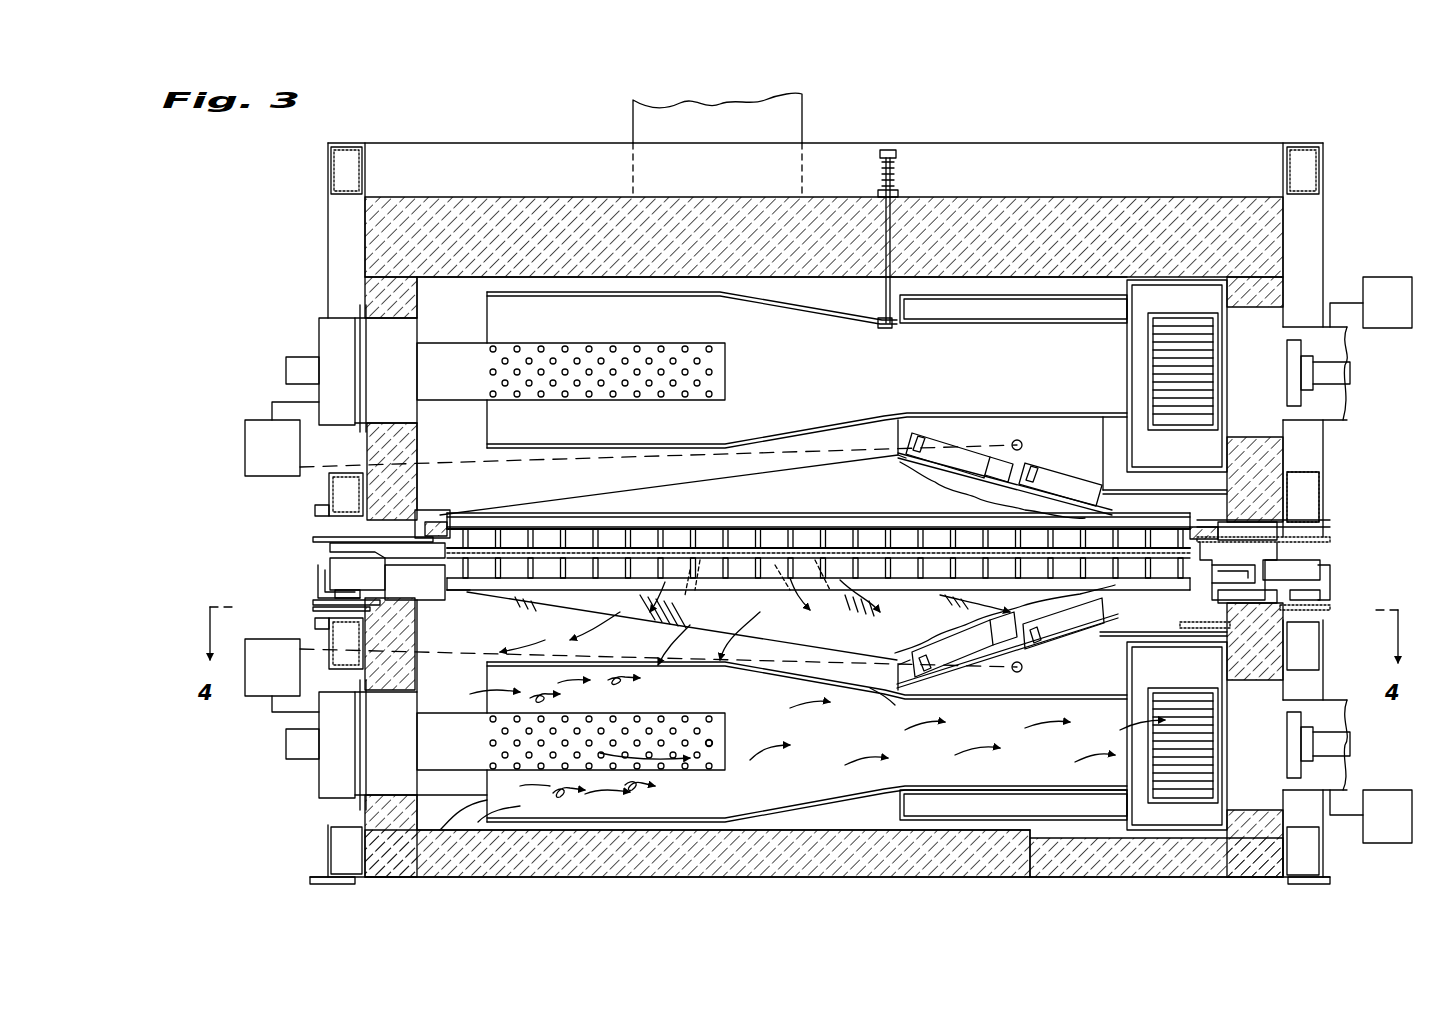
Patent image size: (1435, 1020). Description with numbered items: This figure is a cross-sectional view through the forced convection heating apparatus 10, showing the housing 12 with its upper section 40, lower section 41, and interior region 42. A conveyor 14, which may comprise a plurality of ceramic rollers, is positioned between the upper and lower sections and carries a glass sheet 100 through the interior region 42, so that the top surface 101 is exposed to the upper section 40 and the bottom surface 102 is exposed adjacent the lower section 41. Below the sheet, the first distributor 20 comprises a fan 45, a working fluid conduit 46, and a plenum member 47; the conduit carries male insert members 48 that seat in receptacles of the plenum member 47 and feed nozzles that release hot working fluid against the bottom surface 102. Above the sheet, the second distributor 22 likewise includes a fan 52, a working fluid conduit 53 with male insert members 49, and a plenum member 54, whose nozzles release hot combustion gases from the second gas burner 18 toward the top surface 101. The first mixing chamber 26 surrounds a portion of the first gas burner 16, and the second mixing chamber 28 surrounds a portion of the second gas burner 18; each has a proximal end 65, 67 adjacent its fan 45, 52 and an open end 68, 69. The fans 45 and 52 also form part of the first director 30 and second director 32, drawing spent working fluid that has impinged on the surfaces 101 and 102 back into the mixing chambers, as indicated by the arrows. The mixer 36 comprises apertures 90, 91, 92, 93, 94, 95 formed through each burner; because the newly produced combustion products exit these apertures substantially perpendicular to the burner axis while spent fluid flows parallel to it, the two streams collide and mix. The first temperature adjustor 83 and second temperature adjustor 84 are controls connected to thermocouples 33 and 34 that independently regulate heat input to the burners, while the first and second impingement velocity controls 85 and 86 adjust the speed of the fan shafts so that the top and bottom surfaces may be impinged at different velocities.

The forced convection heating apparatus 10 is at (1255, 574).
The housing 12 is at (1185, 125).
The conveyor 14 is at (338, 560).
The first gas burner 16 is at (462, 715).
The second gas burner 18 is at (470, 402).
The first distributor 20 is at (1205, 660).
The second distributor 22 is at (1215, 455).
The first mixing chamber 26 is at (856, 805).
The second mixing chamber 28 is at (556, 452).
The first director 30 is at (1185, 690).
The second director 32 is at (1170, 310).
The thermocouple 33 is at (1023, 668).
The thermocouple 34 is at (1022, 438).
The mixer 36 is at (700, 830).
The upper section 40 is at (1330, 280).
The lower section 41 is at (485, 875).
The interior region 42 is at (390, 488).
The fan 45 is at (1185, 780).
The working fluid conduit 46 is at (778, 630).
The plenum member 47 is at (1210, 634).
The male insert member 48 is at (955, 660).
The male insert member 49 is at (968, 440).
The fan 52 is at (1175, 358).
The working fluid conduit 53 is at (812, 445).
The plenum member 54 is at (1215, 483).
The proximal end 65 is at (1052, 795).
The proximal end 67 is at (1012, 340).
The open end 68 is at (488, 805).
The open end 69 is at (485, 300).
The first temperature adjustor 83 is at (270, 690).
The second temperature adjustor 84 is at (250, 435).
The first impingement velocity control 85 is at (1388, 798).
The second impingement velocity control 86 is at (1395, 320).
The aperture 90 is at (720, 740).
The aperture 91 is at (700, 712).
The aperture 92 is at (525, 753).
The aperture 93 is at (569, 715).
The aperture 94 is at (625, 730).
The aperture 95 is at (657, 712).
The glass sheet 100 is at (745, 545).
The top surface 101 is at (705, 548).
The bottom surface 102 is at (610, 560).